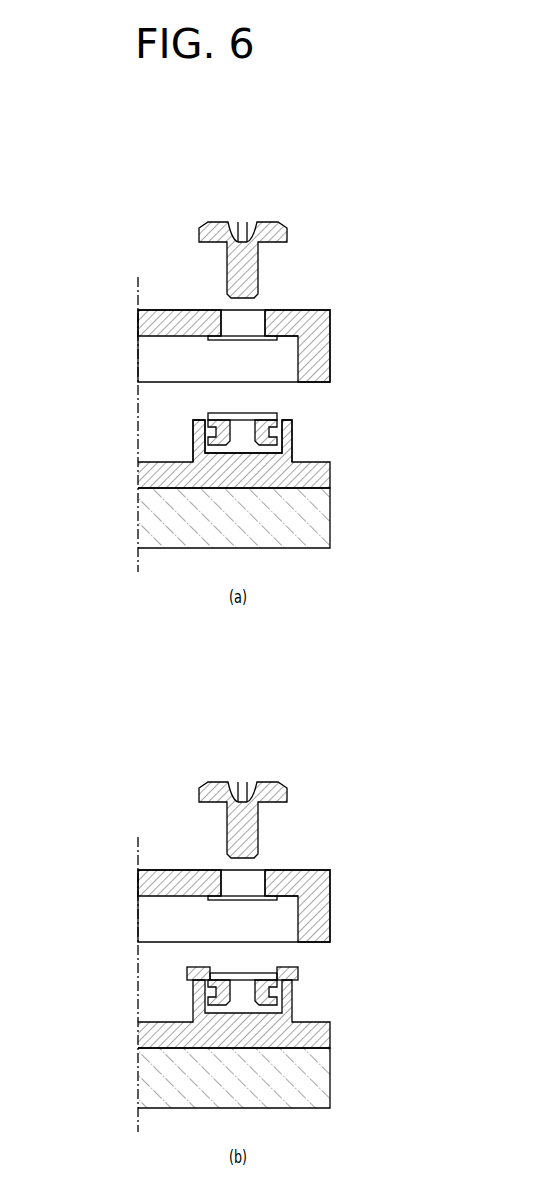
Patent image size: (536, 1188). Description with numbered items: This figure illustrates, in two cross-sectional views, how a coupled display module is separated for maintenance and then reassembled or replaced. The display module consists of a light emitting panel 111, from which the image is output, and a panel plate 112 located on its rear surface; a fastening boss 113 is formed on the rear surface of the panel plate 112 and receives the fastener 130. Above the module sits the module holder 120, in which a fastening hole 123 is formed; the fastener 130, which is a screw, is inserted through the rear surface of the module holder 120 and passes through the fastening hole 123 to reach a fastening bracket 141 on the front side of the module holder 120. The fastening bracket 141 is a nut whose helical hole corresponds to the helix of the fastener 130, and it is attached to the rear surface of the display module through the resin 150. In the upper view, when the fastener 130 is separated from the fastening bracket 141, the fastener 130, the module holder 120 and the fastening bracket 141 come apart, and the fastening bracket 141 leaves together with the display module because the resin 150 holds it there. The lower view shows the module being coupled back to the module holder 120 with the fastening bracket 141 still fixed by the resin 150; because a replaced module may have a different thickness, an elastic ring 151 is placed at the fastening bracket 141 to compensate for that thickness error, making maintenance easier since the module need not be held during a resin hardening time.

The light emitting panel 111 is at (283, 475).
The panel plate 112 is at (313, 517).
The fastening boss 113 is at (290, 445).
The module holder 120 is at (307, 320).
The fastening hole 123 is at (238, 328).
The fastener 130 is at (238, 221).
The fastening bracket 141 is at (212, 422).
The resin 150 is at (278, 430).
The elastic ring 151 is at (289, 974).